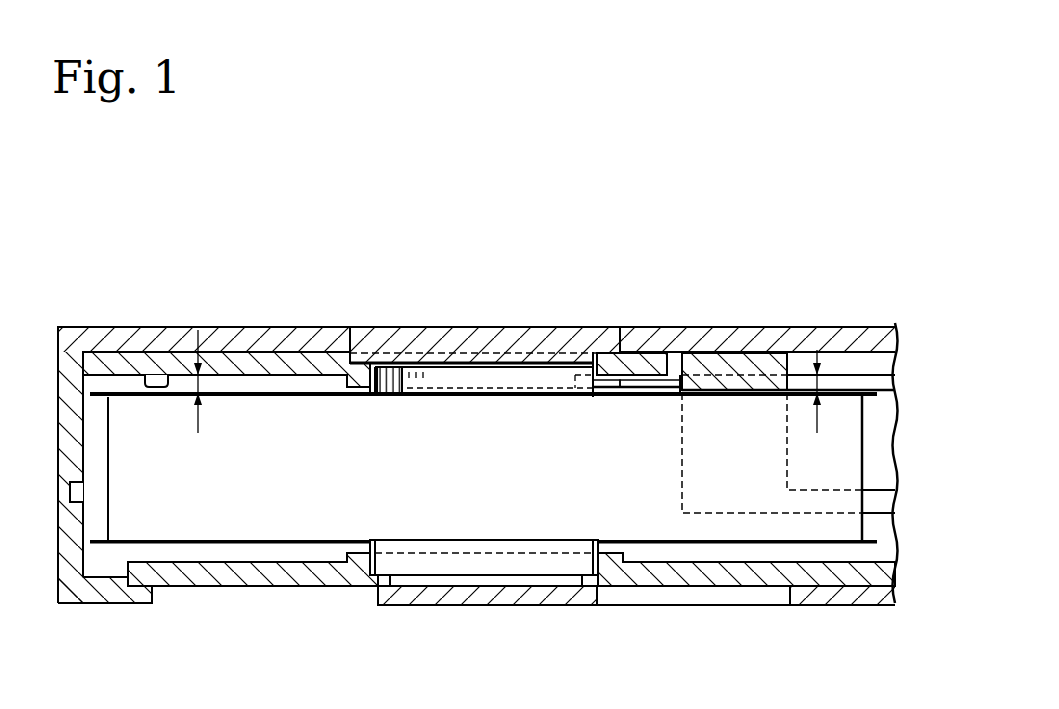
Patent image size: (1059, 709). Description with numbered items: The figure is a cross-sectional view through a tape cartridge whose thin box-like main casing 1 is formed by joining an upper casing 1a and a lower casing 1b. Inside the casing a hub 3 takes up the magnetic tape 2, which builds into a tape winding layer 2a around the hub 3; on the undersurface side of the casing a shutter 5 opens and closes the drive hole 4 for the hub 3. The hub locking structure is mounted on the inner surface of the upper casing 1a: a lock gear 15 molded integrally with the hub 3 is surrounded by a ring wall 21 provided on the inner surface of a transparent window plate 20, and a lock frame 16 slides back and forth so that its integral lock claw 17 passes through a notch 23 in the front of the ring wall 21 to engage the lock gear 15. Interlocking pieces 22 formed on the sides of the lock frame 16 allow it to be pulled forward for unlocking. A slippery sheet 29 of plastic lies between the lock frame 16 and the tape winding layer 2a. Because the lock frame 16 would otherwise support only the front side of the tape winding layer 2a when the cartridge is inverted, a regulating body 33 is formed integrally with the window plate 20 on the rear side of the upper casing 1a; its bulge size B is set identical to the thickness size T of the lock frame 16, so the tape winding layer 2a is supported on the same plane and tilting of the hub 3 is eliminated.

The main casing 1 is at (278, 327).
The upper casing 1a is at (118, 327).
The lower casing 1b is at (90, 603).
The magnetic tape 2 is at (108, 468).
The tape winding layer 2a is at (227, 517).
The hub 3 is at (450, 563).
The drive hole 4 is at (498, 584).
The shutter 5 is at (573, 605).
The lock gear 15 is at (407, 372).
The lock frame 16 is at (712, 363).
The lock claw 17 is at (653, 390).
The window plate 20 is at (535, 327).
The ring wall 21 is at (357, 397).
The interlocking piece 22 is at (813, 513).
The notch 23 is at (610, 402).
The slippery sheet 29 is at (877, 540).
The regulating body 33 is at (160, 387).
The bulge size B is at (202, 383).
The thickness size T is at (820, 383).